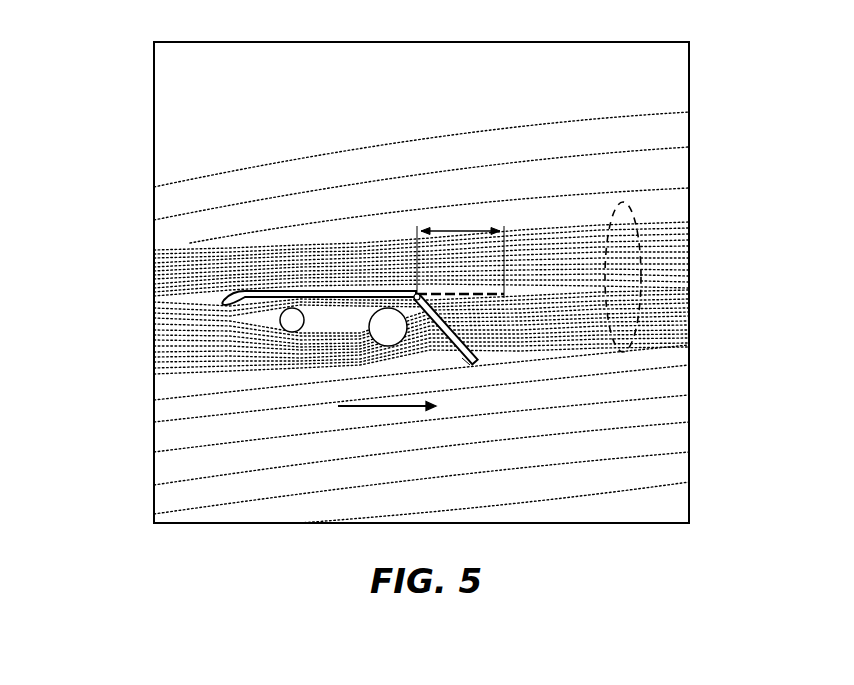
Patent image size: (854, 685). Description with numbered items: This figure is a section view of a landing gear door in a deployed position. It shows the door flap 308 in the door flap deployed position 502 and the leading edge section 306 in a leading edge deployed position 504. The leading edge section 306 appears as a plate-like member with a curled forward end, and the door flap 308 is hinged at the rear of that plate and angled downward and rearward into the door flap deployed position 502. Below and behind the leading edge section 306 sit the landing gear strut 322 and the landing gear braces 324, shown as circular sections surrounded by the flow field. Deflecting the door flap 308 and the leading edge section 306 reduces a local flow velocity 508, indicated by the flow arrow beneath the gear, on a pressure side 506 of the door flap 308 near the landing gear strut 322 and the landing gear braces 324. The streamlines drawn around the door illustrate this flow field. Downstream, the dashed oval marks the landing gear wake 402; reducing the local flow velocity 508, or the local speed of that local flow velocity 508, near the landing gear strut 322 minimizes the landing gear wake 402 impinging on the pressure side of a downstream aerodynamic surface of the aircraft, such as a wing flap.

The leading edge section 306 is at (268, 271).
The leading edge deployed position 504 is at (236, 293).
The door flap 308 is at (611, 356).
The door flap deployed position 502 is at (477, 345).
The landing gear strut 322 is at (388, 330).
The landing gear braces 324 is at (292, 322).
The landing gear wake 402 is at (632, 221).
The pressure side 506 is at (462, 358).
The local flow velocity 508 is at (358, 407).